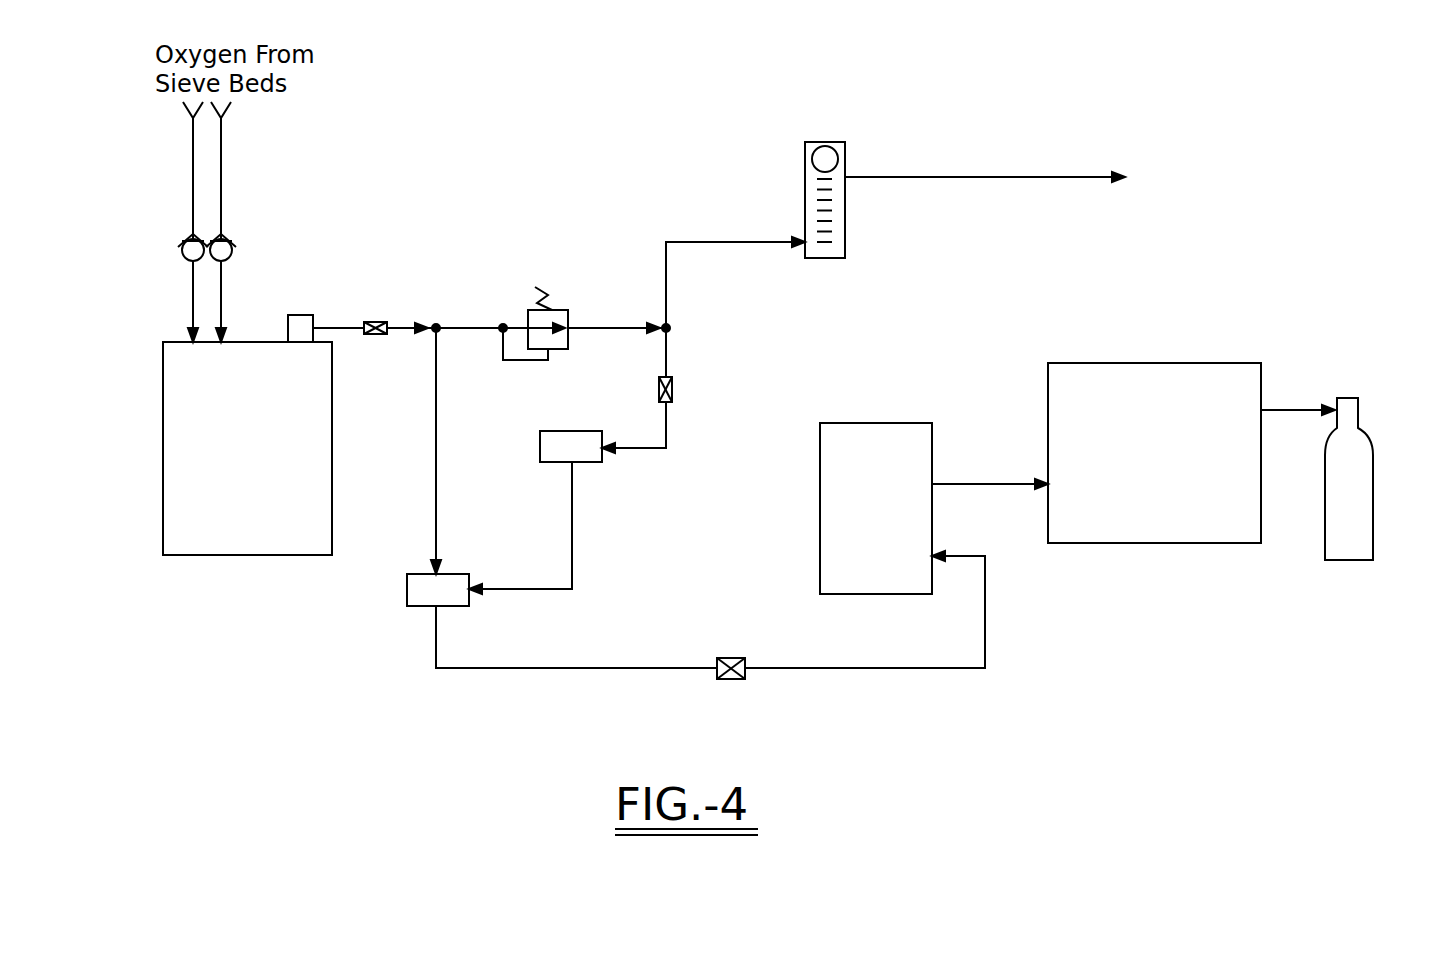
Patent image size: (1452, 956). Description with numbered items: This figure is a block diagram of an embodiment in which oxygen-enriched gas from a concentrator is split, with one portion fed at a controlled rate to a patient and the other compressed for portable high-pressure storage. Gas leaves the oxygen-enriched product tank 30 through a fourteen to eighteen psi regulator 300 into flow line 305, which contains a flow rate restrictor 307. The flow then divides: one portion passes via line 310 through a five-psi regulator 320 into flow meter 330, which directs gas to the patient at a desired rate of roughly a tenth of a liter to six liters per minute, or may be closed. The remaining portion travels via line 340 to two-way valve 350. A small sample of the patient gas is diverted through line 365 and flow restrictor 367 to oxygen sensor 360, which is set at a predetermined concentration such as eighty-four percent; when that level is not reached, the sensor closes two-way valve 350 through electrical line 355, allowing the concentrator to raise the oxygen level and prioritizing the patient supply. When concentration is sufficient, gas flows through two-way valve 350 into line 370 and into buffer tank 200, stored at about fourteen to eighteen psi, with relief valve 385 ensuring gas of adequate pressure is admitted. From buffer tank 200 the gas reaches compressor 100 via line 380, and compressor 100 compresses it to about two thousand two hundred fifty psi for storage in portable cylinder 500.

The oxygen-enriched product tank 30 is at (232, 556).
The compressor 100 is at (1168, 543).
The buffer tank 200 is at (820, 508).
The regulator 300 is at (299, 315).
The flow line 305 is at (403, 331).
The flow rate restrictor 307 is at (381, 321).
The line 310 is at (475, 328).
The regulator 320 is at (568, 311).
The flow meter 330 is at (846, 228).
The line 340 is at (435, 452).
The two-way valve 350 is at (407, 593).
The electrical line 355 is at (573, 530).
The oxygen sensor 360 is at (578, 431).
The line 365 is at (667, 350).
The flow restrictor 367 is at (673, 389).
The line 370 is at (595, 668).
The line 380 is at (997, 483).
The relief valve 385 is at (735, 680).
The cylinder 500 is at (1348, 561).